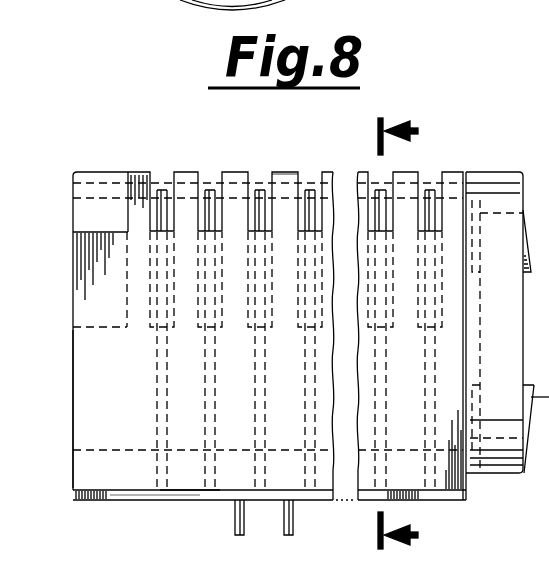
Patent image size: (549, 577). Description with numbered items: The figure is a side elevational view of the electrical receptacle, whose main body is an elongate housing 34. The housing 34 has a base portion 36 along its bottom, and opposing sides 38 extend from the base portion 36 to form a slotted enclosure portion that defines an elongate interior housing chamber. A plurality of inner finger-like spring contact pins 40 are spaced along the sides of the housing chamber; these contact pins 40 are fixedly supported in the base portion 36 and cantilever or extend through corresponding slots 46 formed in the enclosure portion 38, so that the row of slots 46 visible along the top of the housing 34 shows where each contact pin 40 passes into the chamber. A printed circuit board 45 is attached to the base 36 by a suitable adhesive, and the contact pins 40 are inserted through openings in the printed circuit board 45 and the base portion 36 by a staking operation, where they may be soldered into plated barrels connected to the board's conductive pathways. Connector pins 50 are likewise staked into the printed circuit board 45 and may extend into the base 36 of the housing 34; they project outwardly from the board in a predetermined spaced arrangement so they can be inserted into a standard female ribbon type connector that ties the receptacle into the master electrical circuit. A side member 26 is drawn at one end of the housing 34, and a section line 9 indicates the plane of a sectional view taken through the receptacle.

The connector housing assembly 34 is at (256, 150).
The base of housing 36 is at (185, 500).
The housing side wall 38 is at (134, 410).
The electrical contacts 40 is at (203, 172).
The bottom flange strip 45 is at (133, 500).
The partition walls 46 is at (266, 172).
The terminal pins 50 is at (285, 527).
The side latch member 26 is at (498, 473).
The section line 9- 9 is at (389, 335).